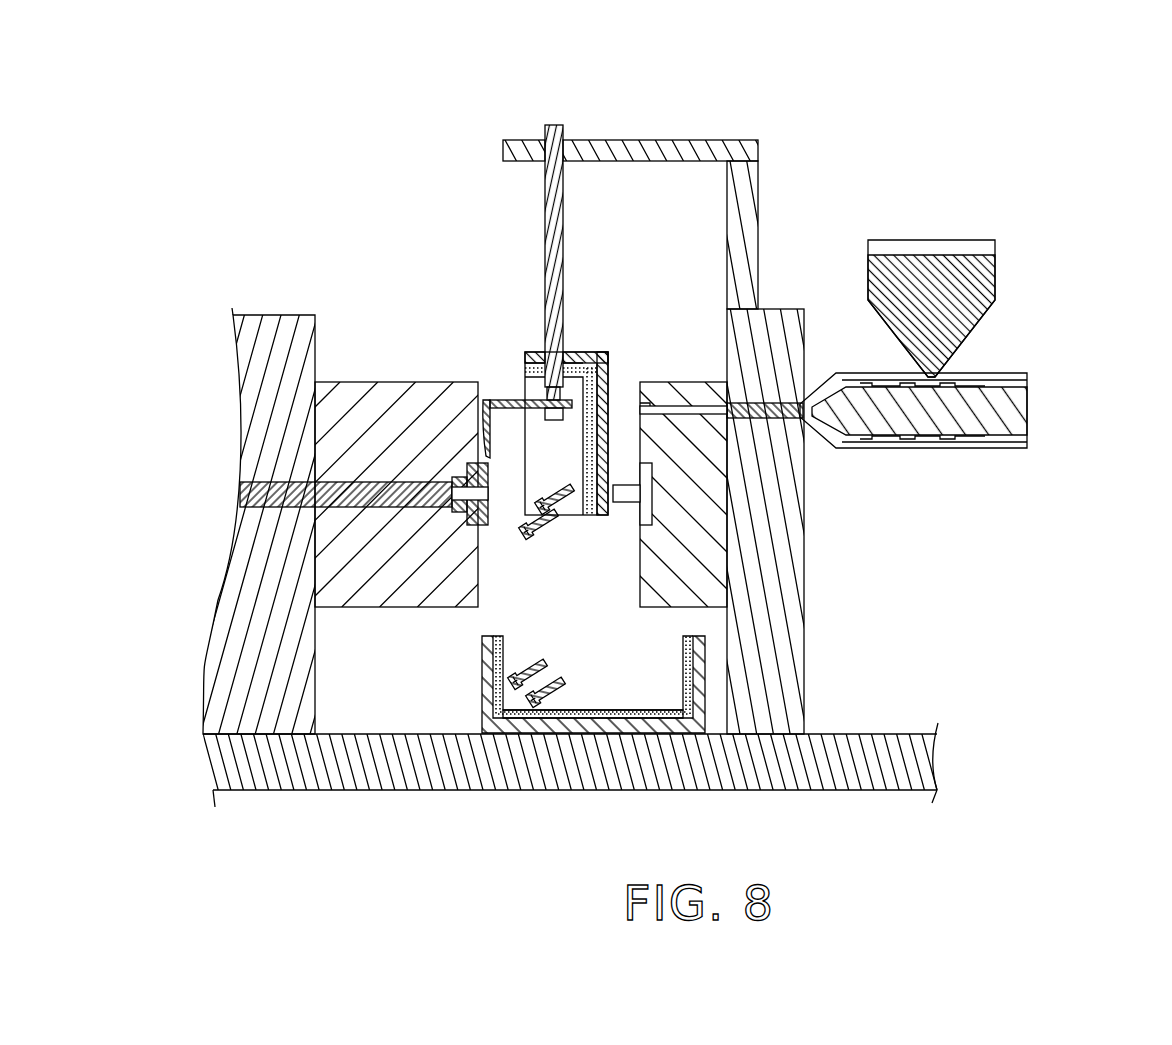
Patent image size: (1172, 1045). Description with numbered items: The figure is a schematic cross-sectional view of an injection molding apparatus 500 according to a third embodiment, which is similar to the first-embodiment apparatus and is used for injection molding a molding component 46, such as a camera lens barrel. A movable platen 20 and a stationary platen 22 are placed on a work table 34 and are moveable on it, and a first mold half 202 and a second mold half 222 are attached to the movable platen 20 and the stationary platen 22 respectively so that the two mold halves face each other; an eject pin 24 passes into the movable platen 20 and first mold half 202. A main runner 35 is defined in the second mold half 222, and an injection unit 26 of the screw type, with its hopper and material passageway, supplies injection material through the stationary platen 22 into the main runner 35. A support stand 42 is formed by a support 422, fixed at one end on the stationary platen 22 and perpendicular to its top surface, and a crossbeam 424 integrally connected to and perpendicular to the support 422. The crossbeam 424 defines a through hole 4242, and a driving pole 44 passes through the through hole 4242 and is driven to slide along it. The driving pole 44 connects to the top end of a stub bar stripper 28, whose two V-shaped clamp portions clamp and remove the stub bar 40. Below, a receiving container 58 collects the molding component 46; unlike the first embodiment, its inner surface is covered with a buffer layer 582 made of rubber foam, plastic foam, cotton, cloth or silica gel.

The injection molding apparatus 500 is at (647, 70).
The movable platen 20 is at (258, 357).
The first mold half 202 is at (332, 567).
The eject pin 24 is at (253, 495).
The stub bar 40 is at (500, 388).
The support stand 42 is at (706, 190).
The support 422 is at (742, 203).
The crossbeam 424 is at (690, 150).
The through hole 4242 is at (543, 140).
The driving pole 44 is at (550, 205).
The stub bar stripper 28 is at (578, 376).
The molding component 46 is at (497, 493).
The second mold half 222 is at (705, 582).
The stationary platen 22 is at (770, 687).
The main runner 35 is at (660, 408).
The injection unit 26 is at (1040, 342).
The work table 34 is at (913, 772).
The receiving container 58 is at (548, 733).
The buffer layer 582 is at (617, 717).